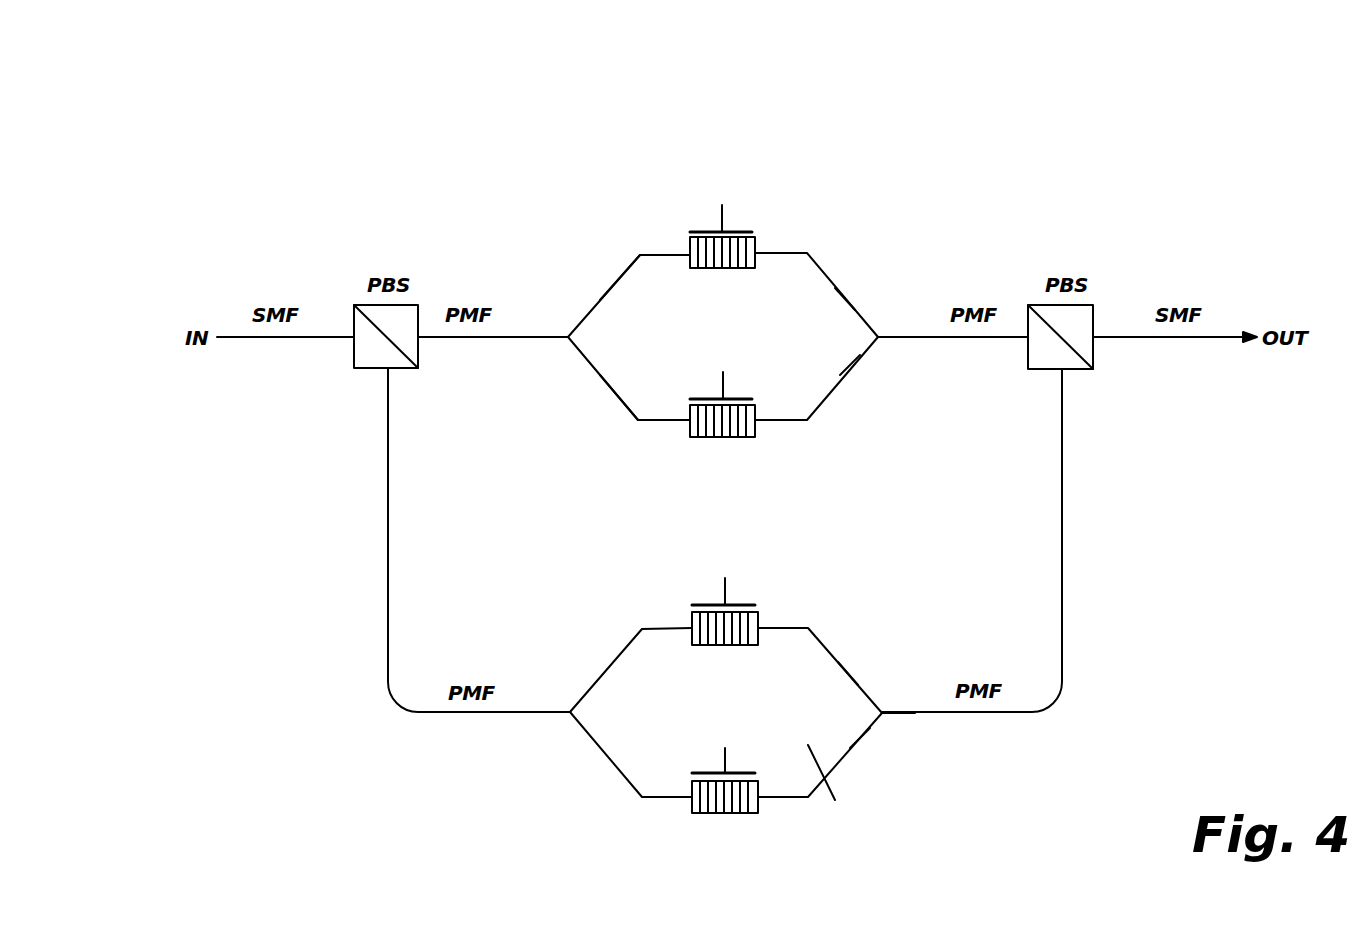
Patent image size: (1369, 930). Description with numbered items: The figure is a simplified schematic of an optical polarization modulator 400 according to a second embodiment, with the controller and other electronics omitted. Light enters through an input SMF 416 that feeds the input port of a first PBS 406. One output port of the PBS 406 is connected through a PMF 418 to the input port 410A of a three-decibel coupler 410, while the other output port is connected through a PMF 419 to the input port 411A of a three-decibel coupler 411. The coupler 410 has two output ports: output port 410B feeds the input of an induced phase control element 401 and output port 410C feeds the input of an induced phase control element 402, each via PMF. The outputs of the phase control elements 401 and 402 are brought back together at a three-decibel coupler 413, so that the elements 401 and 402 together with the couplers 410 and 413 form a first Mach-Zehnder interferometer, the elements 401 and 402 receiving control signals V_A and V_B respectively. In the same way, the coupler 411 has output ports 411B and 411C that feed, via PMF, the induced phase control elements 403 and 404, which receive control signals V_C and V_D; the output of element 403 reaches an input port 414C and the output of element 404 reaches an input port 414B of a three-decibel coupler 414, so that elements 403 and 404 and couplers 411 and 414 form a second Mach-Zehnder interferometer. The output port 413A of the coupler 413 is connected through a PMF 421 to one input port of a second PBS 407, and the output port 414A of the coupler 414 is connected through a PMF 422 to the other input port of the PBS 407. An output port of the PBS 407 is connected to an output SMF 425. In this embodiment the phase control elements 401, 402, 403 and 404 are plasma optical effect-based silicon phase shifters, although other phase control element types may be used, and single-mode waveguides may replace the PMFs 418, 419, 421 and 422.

The optical polarization modulator 400 is at (1113, 150).
The induced phase control element 401 is at (735, 268).
The induced phase control element 402 is at (735, 437).
The induced phase control element 403 is at (738, 645).
The induced phase control element 404 is at (738, 813).
The PBS 406 is at (410, 368).
The PBS 407 is at (1085, 369).
The 3-dB coupler 410 is at (562, 322).
The input port 410A is at (530, 337).
The output port 410B is at (600, 300).
The output port 410C is at (598, 370).
The 3-dB coupler 411 is at (563, 727).
The input port 411A is at (893, 712).
The output port 411B is at (855, 740).
The output port 411C is at (840, 668).
The 3-dB coupler 413 is at (887, 322).
The output port 413A is at (885, 337).
The 3-dB coupler 414 is at (888, 730).
The output port 414A is at (540, 712).
The input port 414B is at (845, 375).
The input port 414C is at (838, 292).
The input SMF 416 is at (290, 337).
The PMF 418 is at (520, 337).
The PMF 419 is at (388, 490).
The PMF 421 is at (930, 337).
The PMF 422 is at (1010, 712).
The output SMF 425 is at (1207, 337).